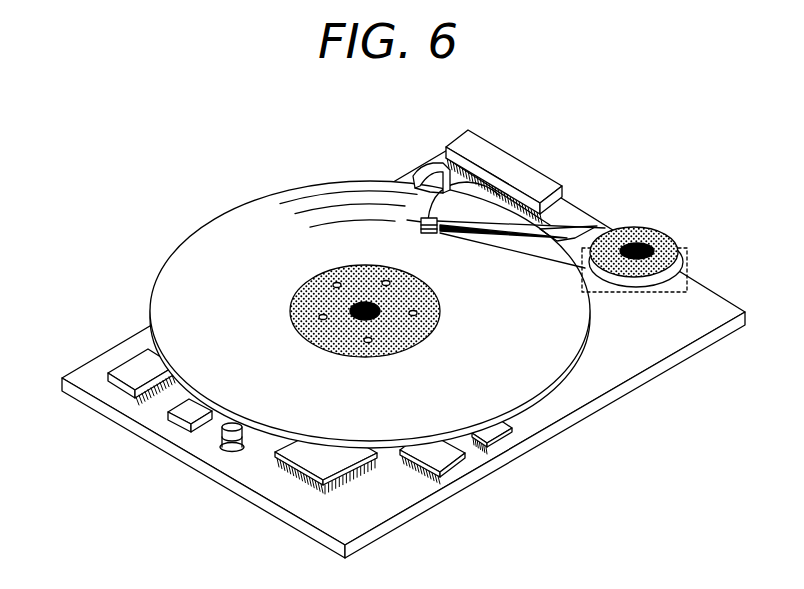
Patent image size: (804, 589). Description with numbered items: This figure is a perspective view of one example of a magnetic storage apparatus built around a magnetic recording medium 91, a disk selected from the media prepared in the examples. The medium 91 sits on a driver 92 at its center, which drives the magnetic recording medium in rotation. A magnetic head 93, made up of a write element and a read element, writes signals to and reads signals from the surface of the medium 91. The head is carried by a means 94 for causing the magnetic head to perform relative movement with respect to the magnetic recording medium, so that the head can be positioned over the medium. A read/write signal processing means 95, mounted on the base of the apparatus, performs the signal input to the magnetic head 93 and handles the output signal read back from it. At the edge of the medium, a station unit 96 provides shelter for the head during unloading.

The magnetic recording medium 91 is at (192, 300).
The driver 92 is at (323, 300).
The magnetic head 93 is at (512, 185).
The means for causing relative movement 94 is at (652, 237).
The read/write signal processing means 95 is at (358, 453).
The station unit 96 is at (420, 172).